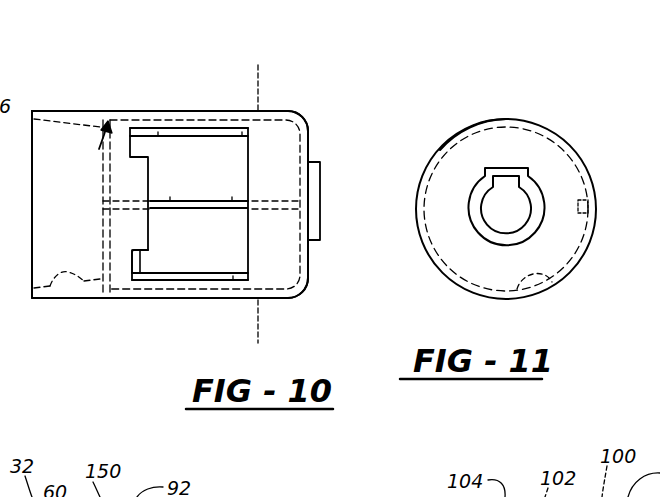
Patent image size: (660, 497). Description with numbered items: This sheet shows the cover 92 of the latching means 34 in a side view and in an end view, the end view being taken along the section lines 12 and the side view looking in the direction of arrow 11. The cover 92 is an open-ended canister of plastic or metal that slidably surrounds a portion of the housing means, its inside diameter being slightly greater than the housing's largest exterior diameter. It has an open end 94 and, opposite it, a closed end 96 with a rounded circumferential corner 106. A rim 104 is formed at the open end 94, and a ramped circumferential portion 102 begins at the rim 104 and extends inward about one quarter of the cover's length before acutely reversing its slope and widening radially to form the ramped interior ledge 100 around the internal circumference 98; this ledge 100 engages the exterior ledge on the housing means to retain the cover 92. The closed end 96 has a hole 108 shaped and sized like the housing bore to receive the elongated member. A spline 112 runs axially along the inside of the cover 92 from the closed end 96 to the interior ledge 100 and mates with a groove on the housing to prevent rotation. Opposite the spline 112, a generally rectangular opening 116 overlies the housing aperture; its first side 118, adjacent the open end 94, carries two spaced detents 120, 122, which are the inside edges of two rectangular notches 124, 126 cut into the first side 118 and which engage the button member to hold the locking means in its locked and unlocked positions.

In FIG. 10, the cap assembly 11 is at (346, 140).
In FIG. 10, the section line 12 is at (226, 343).
In FIG. 10, the latching means 34 is at (268, 110).
In FIG. 11, the latching means 34 is at (476, 124).
In FIG. 10, the cover 92 is at (301, 113).
In FIG. 11, the cover 92 is at (556, 131).
In FIG. 10, the open end 94 is at (33, 130).
In FIG. 10, the closed end 96 is at (312, 288).
In FIG. 11, the closed end 96 is at (570, 180).
In FIG. 10, the internal circumference 98 is at (50, 203).
In FIG. 11, the internal circumference 98 is at (552, 284).
In FIG. 10, the ramped interior ledge 100 is at (112, 120).
In FIG. 10, the ramped circumferential portion 102 is at (59, 283).
In FIG. 10, the rim 104 is at (33, 112).
In FIG. 10, the rounded circumferential corner 106 is at (308, 112).
In FIG. 11, the hole 108 is at (497, 228).
In FIG. 10, the spline 112 is at (223, 202).
In FIG. 11, the spline 112 is at (596, 205).
In FIG. 10, the opening 116 is at (236, 240).
In FIG. 11, the opening 116 is at (652, 270).
In FIG. 10, the first side 118 is at (150, 238).
In FIG. 10, the detent 120 is at (144, 156).
In FIG. 10, the detent 122 is at (132, 266).
In FIG. 10, the rectangular notch 124 is at (160, 137).
In FIG. 10, the rectangular notch 126 is at (143, 262).